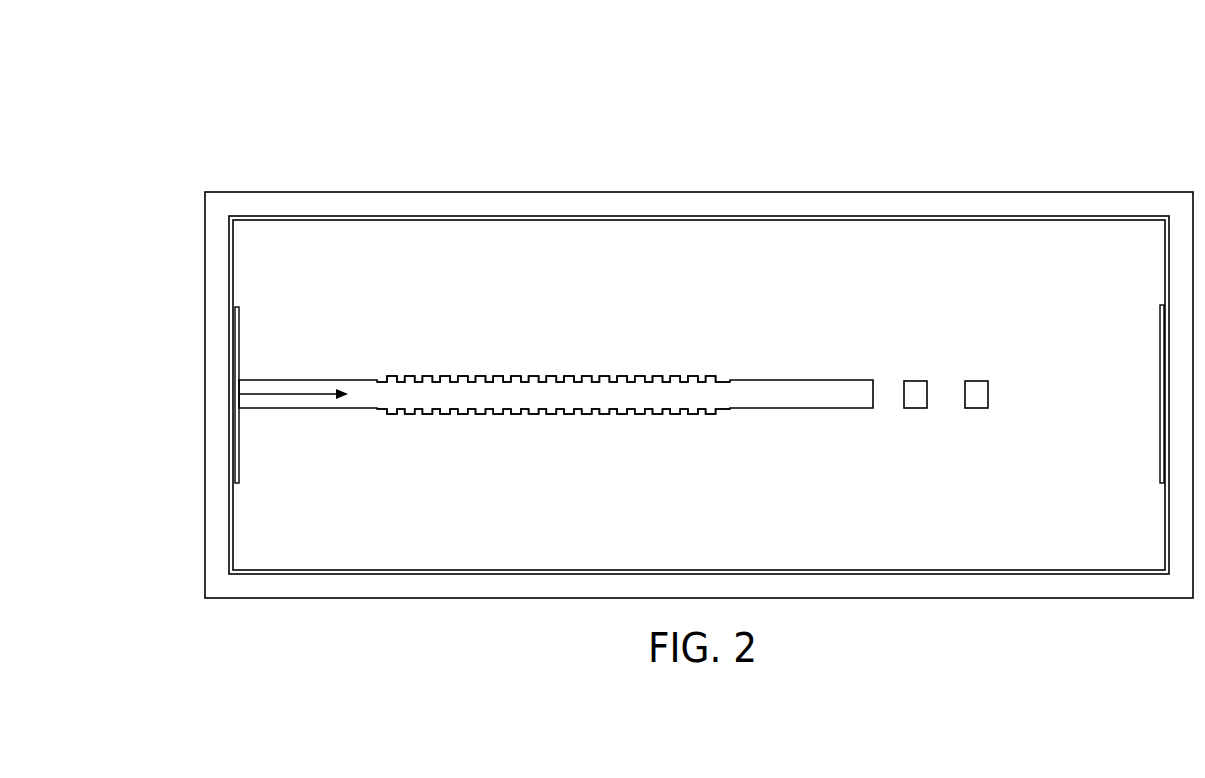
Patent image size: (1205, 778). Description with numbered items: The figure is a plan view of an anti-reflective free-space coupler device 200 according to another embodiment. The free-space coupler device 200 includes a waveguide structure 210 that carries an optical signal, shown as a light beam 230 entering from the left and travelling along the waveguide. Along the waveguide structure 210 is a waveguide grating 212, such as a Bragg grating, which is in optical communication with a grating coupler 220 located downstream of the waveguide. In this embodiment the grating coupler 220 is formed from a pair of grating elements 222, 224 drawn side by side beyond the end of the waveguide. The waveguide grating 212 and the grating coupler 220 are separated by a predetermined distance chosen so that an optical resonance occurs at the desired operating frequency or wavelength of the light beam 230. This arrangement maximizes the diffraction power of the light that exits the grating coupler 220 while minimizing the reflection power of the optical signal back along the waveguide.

The anti-reflective free-space coupler device 200 is at (166, 120).
The waveguide structure 210 is at (759, 374).
The waveguide grating 212 is at (463, 377).
The grating coupler 220 is at (950, 405).
The grating element 222 is at (912, 379).
The grating element 224 is at (979, 379).
The light beam 230 is at (300, 393).